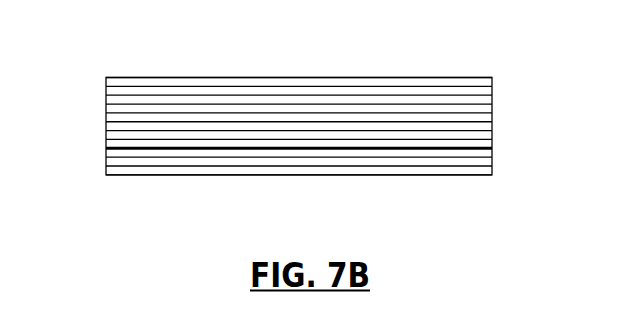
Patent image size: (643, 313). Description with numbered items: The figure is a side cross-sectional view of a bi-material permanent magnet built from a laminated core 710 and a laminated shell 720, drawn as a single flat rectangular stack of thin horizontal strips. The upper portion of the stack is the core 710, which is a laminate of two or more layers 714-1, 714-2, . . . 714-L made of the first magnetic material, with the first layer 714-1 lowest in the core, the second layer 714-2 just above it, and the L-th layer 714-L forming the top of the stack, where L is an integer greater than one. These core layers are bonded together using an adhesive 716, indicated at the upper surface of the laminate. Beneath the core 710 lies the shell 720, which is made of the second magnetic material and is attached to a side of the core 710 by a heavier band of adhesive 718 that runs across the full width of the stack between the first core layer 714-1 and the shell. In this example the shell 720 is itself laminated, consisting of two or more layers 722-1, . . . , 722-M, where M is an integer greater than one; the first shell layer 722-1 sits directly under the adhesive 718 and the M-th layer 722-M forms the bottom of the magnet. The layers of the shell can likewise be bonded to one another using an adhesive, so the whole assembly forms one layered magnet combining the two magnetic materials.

The core 710 is at (516, 62).
The layer 714-L is at (492, 86).
The layer 714-2 is at (492, 136).
The layer 714-1 is at (492, 145).
The adhesive 716 is at (357, 78).
The adhesive 718 is at (203, 150).
The shell 720 is at (122, 186).
The layer 722-1 is at (492, 157).
The layer 722-M is at (493, 168).